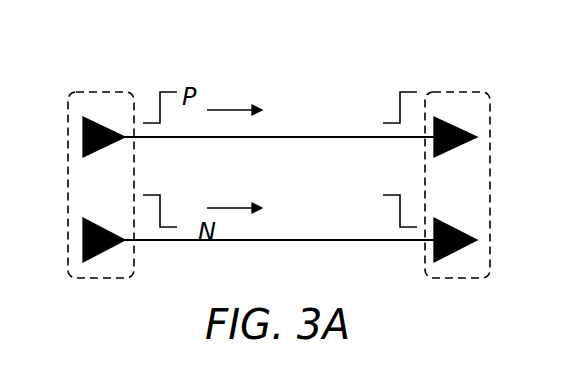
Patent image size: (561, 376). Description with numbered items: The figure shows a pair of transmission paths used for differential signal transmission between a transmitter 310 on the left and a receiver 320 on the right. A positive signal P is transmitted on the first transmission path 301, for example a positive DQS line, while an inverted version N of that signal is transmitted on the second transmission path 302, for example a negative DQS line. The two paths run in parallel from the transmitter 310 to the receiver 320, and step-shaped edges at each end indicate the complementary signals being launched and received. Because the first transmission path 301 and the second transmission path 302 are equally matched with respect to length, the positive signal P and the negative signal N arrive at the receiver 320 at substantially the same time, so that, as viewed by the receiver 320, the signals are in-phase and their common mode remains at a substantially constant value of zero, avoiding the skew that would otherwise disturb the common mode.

The transmitter 310 is at (103, 92).
The receiver 320 is at (457, 92).
The first transmission path 301 is at (310, 137).
The second transmission path 302 is at (310, 240).